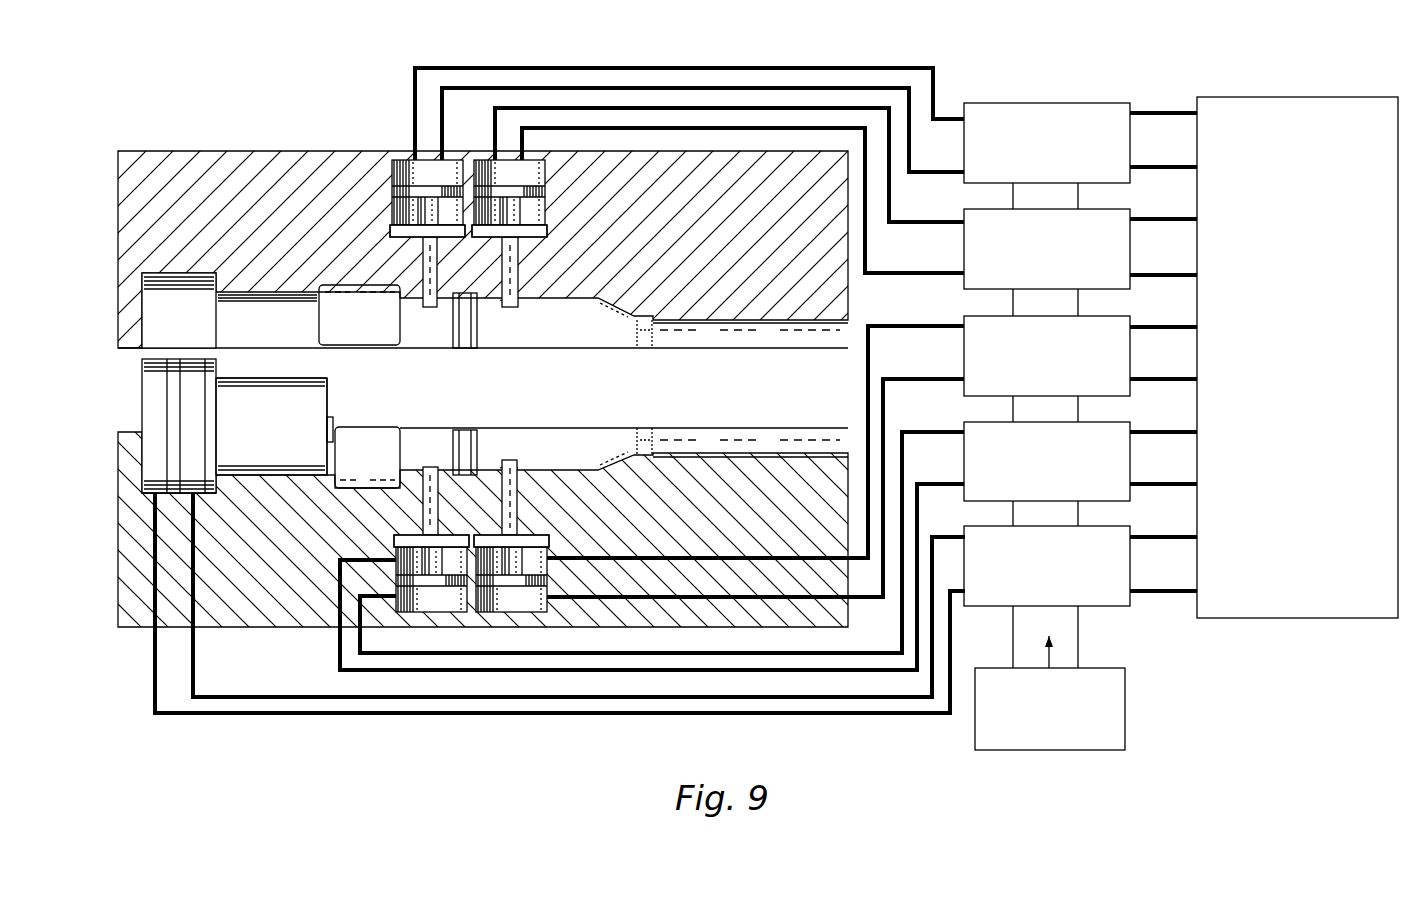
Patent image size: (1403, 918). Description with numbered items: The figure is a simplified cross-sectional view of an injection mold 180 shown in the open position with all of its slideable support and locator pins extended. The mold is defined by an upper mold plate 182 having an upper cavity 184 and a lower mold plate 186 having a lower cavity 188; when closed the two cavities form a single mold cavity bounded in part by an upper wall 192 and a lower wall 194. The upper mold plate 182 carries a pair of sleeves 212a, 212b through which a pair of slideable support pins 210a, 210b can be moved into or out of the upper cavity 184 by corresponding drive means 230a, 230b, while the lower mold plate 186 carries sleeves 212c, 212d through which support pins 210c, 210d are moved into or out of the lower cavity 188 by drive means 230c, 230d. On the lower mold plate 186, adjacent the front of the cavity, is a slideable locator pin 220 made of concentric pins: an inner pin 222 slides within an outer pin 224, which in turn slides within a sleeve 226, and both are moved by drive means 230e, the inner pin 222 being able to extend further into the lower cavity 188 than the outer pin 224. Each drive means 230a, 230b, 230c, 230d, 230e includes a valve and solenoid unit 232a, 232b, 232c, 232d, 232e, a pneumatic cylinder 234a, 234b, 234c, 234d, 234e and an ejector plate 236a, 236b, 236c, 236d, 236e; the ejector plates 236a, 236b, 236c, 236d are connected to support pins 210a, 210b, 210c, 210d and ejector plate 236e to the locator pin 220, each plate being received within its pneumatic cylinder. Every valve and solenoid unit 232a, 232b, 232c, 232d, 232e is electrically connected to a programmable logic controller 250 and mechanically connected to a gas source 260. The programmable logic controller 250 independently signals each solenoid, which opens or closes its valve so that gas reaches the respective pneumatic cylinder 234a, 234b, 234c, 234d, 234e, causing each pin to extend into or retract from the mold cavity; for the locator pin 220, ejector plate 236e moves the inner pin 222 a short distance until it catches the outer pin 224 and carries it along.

The injection mold 180 is at (350, 747).
The upper mold plate 182 is at (256, 226).
The upper cavity 184 is at (608, 327).
The lower mold plate 186 is at (253, 559).
The lower cavity 188 is at (608, 447).
The upper wall 192 is at (382, 290).
The lower wall 194 is at (378, 486).
The slideable support pin 210a is at (420, 310).
The slideable support pin 210b is at (512, 310).
The slideable support pin 210c is at (520, 492).
The slideable support pin 210d is at (425, 498).
The sleeve 212a is at (445, 349).
The sleeve 212b is at (508, 347).
The sleeve 212c is at (514, 472).
The sleeve 212d is at (447, 436).
The slideable locator pin 220 is at (270, 368).
The inner pin 222 is at (333, 420).
The outer pin 224 is at (328, 380).
The sleeve 226 is at (296, 380).
The drive means 230a is at (375, 160).
The drive means 230b is at (481, 152).
The drive means 230c is at (513, 613).
The drive means 230d is at (443, 613).
The drive means 230e is at (211, 320).
The valve and solenoid unit 232a is at (1022, 179).
The valve and solenoid unit 232b is at (1022, 285).
The valve and solenoid unit 232c is at (1022, 392).
The valve and solenoid unit 232d is at (1022, 498).
The valve and solenoid unit 232e is at (1022, 602).
The pneumatic cylinder 234a is at (400, 158).
The pneumatic cylinder 234b is at (547, 170).
The pneumatic cylinder 234c is at (547, 590).
The pneumatic cylinder 234d is at (396, 590).
The pneumatic cylinder 234e is at (151, 495).
The ejector plate 236a is at (392, 232).
The ejector plate 236b is at (547, 233).
The ejector plate 236c is at (547, 540).
The ejector plate 236d is at (396, 548).
The ejector plate 236e is at (216, 495).
The programmable logic controller 250 is at (1298, 620).
The gas source 260 is at (1097, 752).